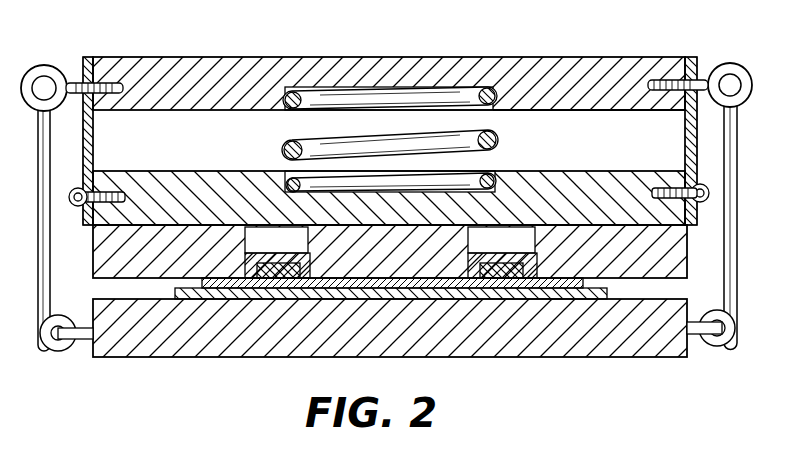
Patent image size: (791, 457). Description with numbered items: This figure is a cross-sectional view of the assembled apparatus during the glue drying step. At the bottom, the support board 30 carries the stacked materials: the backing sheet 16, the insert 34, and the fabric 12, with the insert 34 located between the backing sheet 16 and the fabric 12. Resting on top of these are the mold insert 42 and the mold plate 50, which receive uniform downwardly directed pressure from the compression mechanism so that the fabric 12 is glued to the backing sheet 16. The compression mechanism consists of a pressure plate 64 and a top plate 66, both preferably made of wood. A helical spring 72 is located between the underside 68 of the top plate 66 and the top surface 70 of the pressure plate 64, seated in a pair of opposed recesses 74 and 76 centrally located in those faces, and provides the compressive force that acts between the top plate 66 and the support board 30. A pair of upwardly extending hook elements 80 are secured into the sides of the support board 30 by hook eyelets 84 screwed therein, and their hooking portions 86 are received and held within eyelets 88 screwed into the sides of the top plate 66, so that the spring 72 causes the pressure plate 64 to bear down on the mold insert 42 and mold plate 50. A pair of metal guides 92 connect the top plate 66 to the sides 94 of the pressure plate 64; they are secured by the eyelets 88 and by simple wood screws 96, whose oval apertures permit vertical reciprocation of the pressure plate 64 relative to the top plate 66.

The fabric 12 is at (200, 287).
The backing sheet 16 is at (185, 300).
The support board 30 is at (645, 340).
The insert 34 is at (272, 280).
The mold insert 42 is at (302, 280).
The mold plate 50 is at (672, 240).
The pressure plate 64 is at (100, 188).
The top plate 66 is at (389, 58).
The underside of top plate 68 is at (639, 111).
The top surface of pressure plate 70 is at (181, 172).
The helical spring 72 is at (435, 100).
The recess 74 is at (328, 90).
The recess 76 is at (506, 176).
The hook element 80 is at (737, 226).
The hook eyelet 84 is at (692, 336).
The hooking portion 86 is at (735, 95).
The eyelet 88 is at (720, 64).
The metal guide 92 is at (80, 65).
The side of pressure plate 94 is at (84, 226).
The wood screw 96 is at (79, 203).